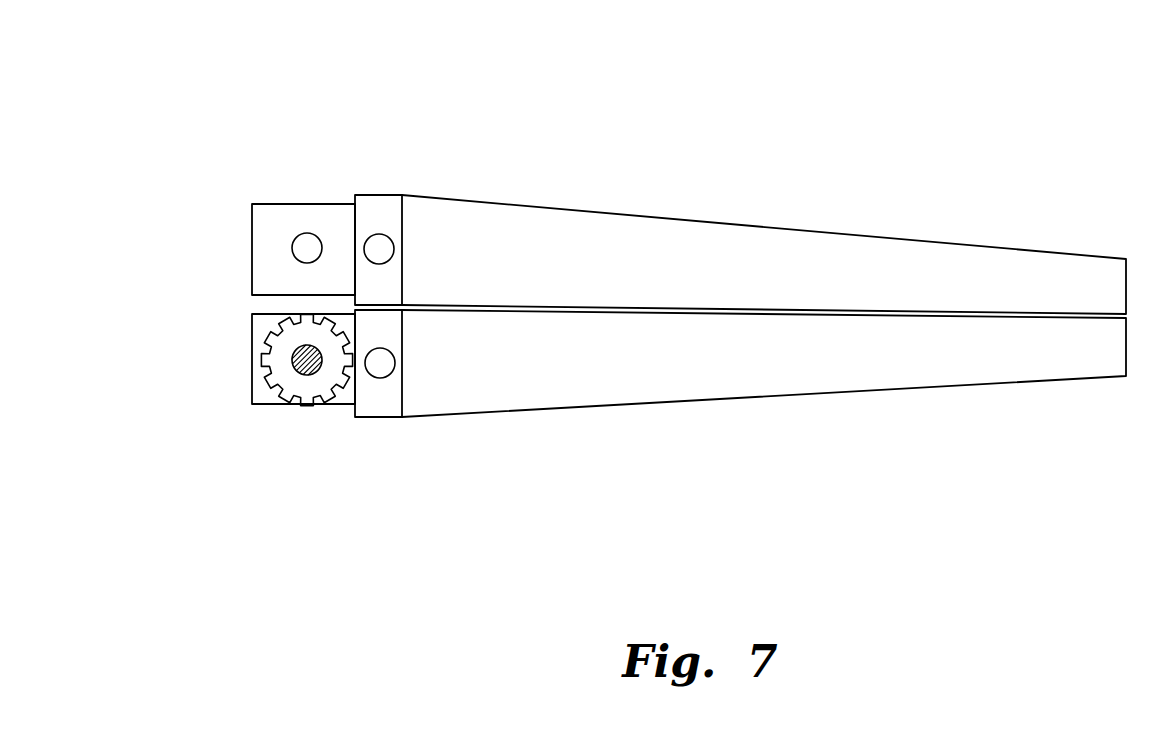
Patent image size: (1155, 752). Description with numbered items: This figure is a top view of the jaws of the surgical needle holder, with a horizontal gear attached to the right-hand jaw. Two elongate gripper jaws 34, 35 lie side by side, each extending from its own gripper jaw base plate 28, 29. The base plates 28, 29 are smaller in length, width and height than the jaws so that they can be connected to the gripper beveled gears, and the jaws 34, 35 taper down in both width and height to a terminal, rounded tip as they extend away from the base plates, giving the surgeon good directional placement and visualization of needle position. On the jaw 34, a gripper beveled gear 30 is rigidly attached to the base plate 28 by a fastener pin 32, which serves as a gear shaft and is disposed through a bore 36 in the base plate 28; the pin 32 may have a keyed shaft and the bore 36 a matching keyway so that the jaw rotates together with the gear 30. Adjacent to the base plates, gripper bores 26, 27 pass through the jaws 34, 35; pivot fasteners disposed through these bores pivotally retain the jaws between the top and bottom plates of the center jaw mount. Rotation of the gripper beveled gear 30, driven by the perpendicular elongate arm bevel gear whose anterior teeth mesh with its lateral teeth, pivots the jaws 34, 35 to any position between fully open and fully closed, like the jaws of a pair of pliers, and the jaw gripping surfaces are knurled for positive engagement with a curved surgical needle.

The gripper bore 26 is at (380, 378).
The gripper bore 27 is at (378, 243).
The gripper jaw base plate 28 is at (348, 403).
The gripper jaw base plate 29 is at (315, 214).
The gripper beveled gear 30 is at (312, 407).
The fastener pin 32 is at (303, 372).
The gripper jaw 34 is at (760, 358).
The gripper jaw 35 is at (760, 258).
The bore 36 is at (302, 243).